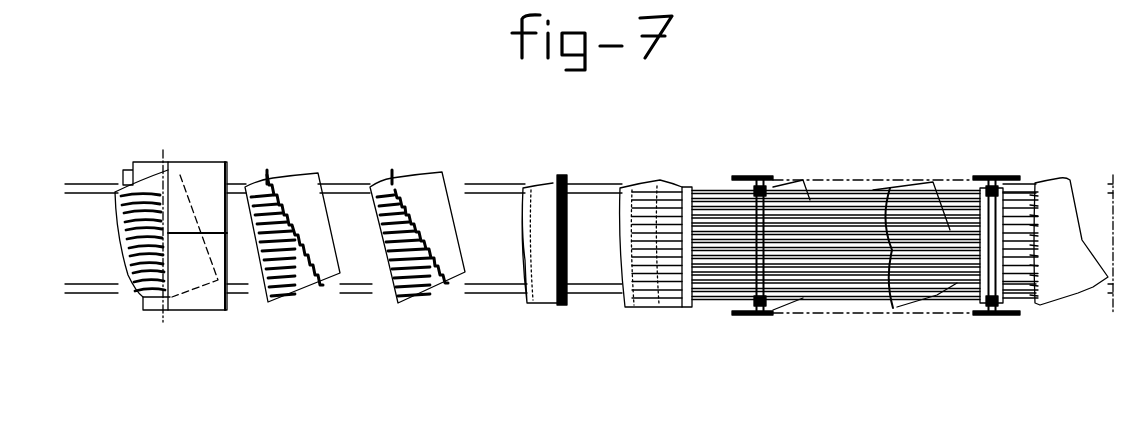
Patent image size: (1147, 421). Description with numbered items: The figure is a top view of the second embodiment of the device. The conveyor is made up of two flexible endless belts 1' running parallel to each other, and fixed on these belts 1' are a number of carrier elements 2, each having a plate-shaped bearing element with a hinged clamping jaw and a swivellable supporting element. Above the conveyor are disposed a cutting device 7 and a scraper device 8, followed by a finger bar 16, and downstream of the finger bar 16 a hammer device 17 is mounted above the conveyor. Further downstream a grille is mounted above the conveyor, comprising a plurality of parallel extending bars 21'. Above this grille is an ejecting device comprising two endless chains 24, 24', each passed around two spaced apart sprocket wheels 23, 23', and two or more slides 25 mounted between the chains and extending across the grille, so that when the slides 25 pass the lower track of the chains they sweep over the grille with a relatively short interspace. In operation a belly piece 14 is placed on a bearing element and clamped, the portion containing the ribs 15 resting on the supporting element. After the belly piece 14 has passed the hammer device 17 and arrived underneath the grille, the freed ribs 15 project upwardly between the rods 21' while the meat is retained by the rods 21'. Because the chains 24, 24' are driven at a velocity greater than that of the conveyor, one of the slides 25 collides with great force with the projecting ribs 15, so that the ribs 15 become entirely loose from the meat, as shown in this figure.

The carrier element 2 is at (191, 149).
The belly piece 14 is at (312, 184).
The ribs 15 is at (283, 295).
The cutting device 7 is at (312, 272).
The scraper device 8 is at (437, 272).
The finger bar 16 is at (565, 295).
The hammer device 17 is at (666, 310).
The bars 21' is at (863, 241).
The sprocket wheel 23 is at (872, 266).
The sprocket wheel 23' is at (884, 162).
The endless chain 24 is at (873, 318).
The endless chain 24' is at (873, 179).
The slide 25 is at (985, 275).
The endless belt 1' is at (1071, 241).